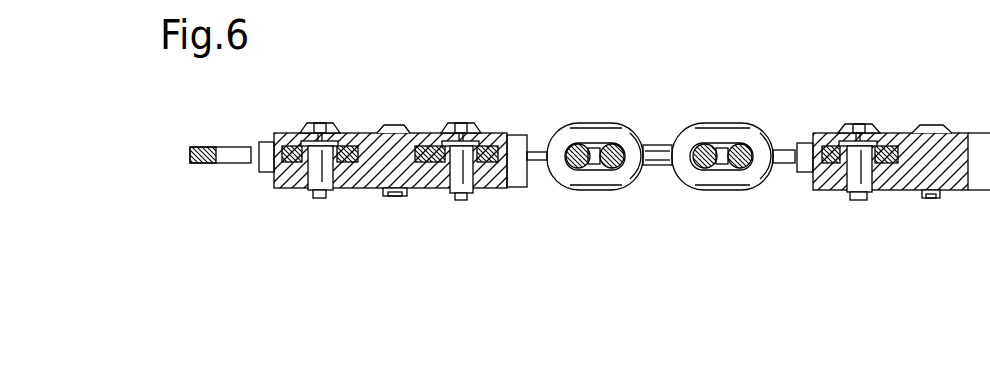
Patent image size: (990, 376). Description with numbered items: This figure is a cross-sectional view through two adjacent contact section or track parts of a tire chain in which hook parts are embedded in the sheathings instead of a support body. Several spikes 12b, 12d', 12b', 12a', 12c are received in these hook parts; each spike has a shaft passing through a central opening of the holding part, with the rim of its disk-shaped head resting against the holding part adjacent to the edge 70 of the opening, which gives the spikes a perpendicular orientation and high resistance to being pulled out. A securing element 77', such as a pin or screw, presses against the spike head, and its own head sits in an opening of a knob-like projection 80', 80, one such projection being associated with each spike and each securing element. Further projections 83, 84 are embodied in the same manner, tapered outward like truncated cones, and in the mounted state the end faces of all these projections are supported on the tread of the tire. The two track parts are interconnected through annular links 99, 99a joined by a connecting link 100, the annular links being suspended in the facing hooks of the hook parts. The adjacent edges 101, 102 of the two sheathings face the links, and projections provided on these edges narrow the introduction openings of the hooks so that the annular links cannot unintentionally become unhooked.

The projection 83 is at (400, 122).
The securing element 77' is at (466, 98).
The knob-like projection 80' is at (468, 131).
The edge of the sheathing 101 is at (509, 135).
The edge of the sheathing 102 is at (813, 135).
The edge of the opening 70 is at (858, 126).
The knob-like projection 80 is at (870, 128).
The projection 84 is at (932, 125).
The spike 12b is at (299, 220).
The spike 12d' is at (378, 219).
The spike 12b' is at (452, 221).
The annular link 99 is at (595, 190).
The connecting link 100 is at (658, 165).
The annular link 99a is at (723, 190).
The spike 12a' is at (843, 222).
The spike 12c is at (920, 198).